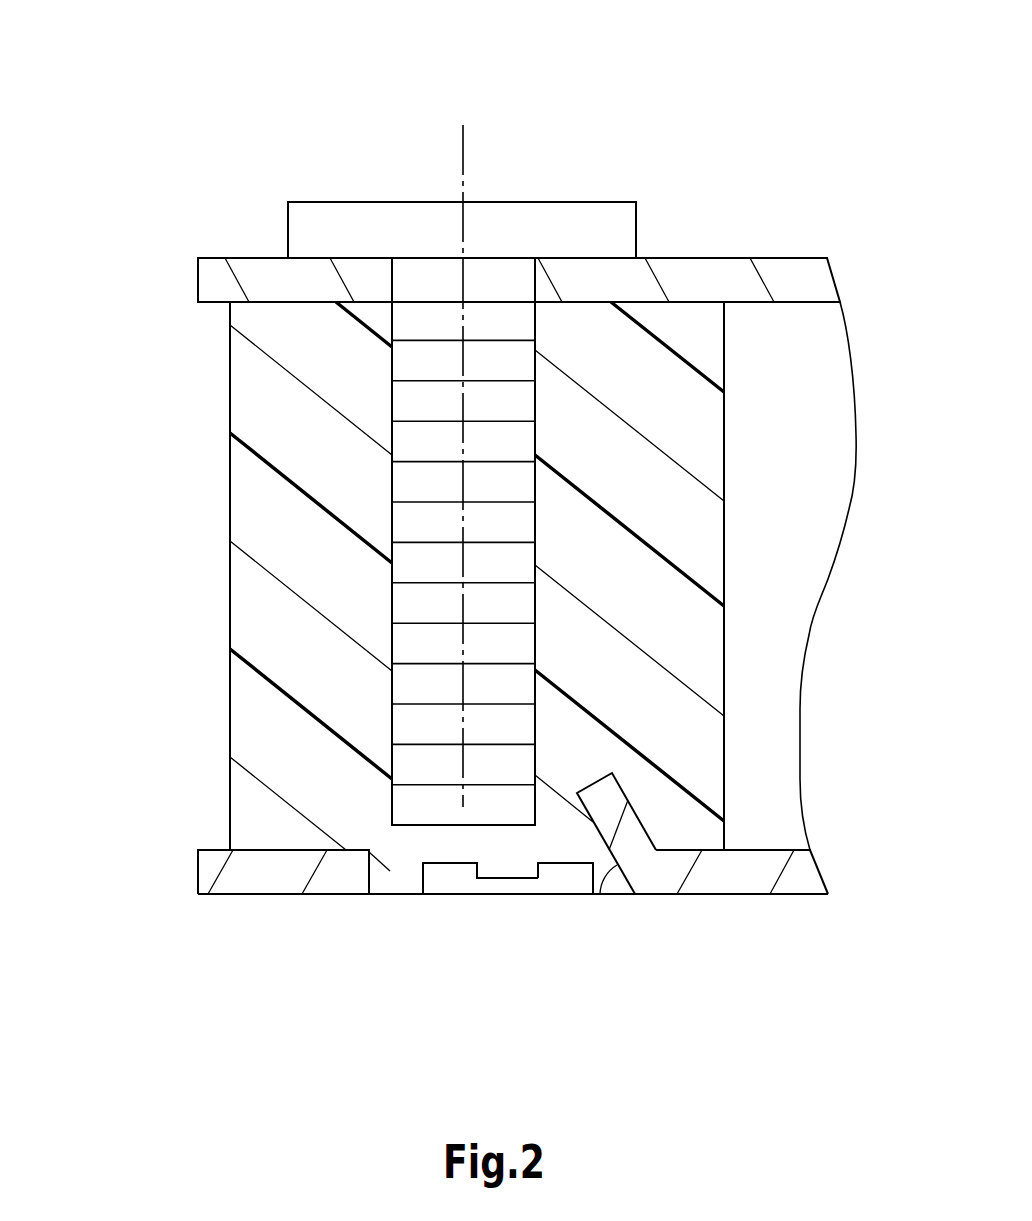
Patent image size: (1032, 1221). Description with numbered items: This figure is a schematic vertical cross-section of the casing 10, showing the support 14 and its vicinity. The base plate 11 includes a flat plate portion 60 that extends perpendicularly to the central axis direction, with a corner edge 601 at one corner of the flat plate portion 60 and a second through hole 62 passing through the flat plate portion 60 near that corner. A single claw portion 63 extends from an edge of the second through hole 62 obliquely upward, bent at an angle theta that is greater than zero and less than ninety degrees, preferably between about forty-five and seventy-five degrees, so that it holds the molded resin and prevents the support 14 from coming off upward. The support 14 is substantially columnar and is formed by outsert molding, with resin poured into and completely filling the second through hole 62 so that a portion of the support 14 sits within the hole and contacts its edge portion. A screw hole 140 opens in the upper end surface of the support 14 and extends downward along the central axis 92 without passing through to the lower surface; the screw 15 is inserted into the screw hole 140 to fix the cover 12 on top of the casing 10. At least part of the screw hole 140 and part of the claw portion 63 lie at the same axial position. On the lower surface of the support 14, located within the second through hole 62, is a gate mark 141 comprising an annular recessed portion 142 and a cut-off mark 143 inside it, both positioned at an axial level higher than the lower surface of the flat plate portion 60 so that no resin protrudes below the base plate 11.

The casing 10 is at (305, 113).
The base plate 11 is at (803, 924).
The cover 12 is at (715, 280).
The support 14 is at (295, 623).
The screw 15 is at (423, 397).
The screw hole 140 is at (497, 310).
The gate mark 141 is at (508, 973).
The recessed portion 142 is at (560, 894).
The cut-off mark 143 is at (505, 894).
The flat plate portion 60 is at (725, 880).
The corner edge 601 is at (198, 875).
The second through hole 62 is at (393, 893).
The claw portion 63 is at (613, 812).
The central axis 92 is at (457, 160).